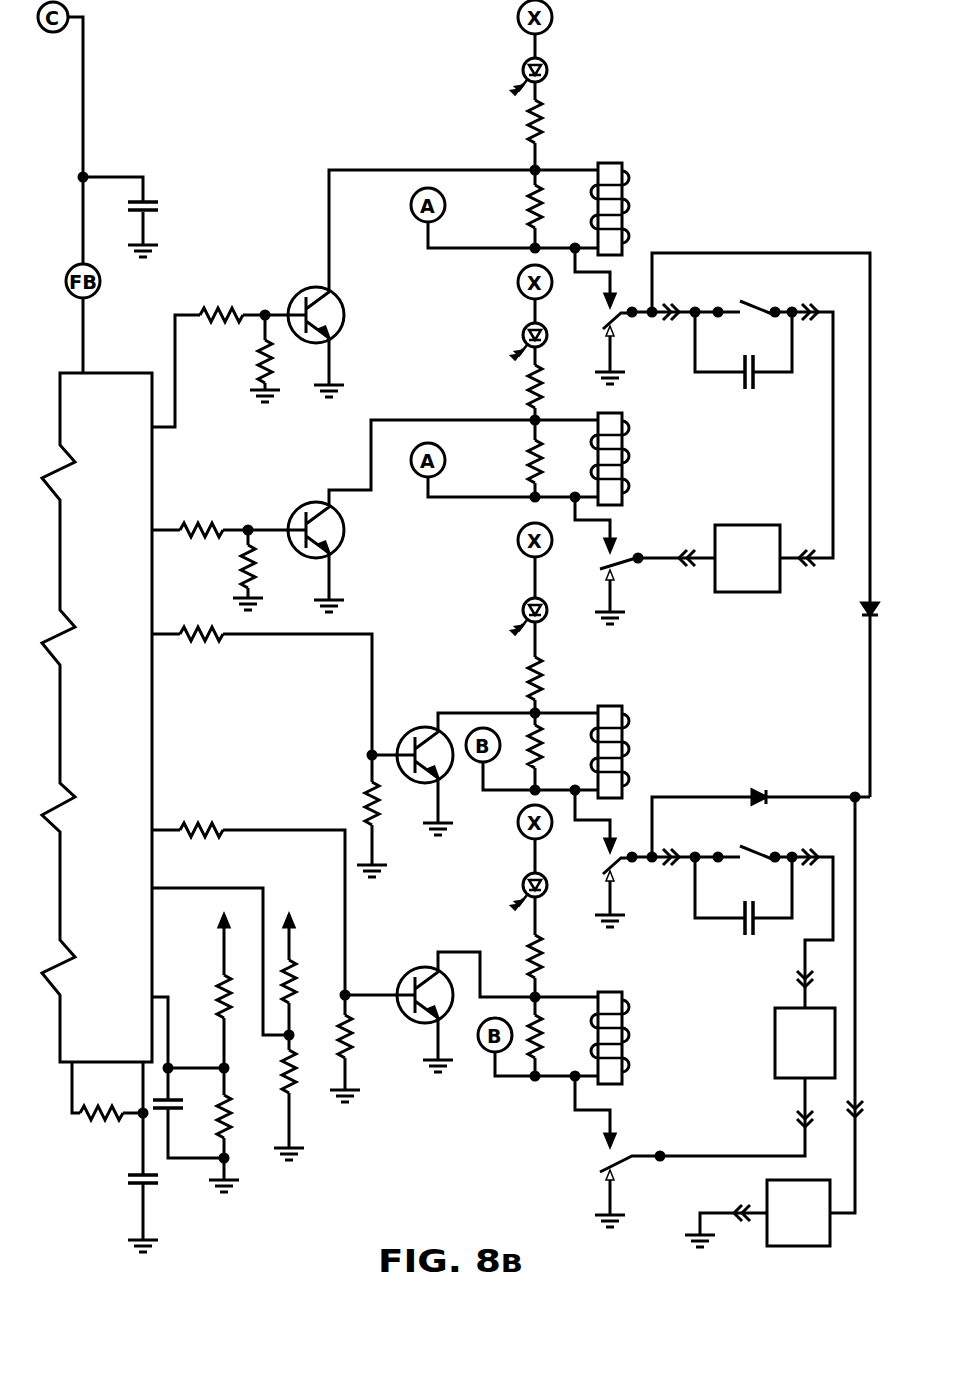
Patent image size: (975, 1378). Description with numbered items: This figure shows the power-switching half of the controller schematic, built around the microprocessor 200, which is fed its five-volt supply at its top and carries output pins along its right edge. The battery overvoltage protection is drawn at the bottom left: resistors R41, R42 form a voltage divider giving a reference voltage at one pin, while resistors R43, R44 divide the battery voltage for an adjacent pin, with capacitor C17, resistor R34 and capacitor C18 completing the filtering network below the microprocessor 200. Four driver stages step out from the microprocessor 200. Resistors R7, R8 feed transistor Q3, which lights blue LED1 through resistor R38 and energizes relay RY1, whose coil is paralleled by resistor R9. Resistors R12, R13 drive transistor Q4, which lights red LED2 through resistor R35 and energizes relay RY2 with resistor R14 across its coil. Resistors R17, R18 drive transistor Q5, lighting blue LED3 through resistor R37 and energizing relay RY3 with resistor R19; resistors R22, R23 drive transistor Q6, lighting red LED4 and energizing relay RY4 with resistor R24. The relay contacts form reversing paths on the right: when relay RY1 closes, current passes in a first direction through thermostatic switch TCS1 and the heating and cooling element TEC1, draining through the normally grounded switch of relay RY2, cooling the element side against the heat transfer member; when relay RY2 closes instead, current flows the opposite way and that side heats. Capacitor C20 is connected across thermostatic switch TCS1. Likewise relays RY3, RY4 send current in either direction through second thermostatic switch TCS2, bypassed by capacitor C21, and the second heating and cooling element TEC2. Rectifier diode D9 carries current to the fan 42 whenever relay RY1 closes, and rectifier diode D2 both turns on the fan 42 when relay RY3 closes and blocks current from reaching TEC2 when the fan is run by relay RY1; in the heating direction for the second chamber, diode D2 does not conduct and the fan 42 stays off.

The microprocessor 200 is at (118, 484).
The fan 42 is at (767, 1195).
The resistor R7 is at (221, 301).
The resistor R8 is at (252, 361).
The transistor Q3 is at (313, 307).
The resistor R12 is at (201, 516).
The resistor R13 is at (229, 566).
The transistor Q4 is at (316, 518).
The resistor R17 is at (202, 650).
The resistor R18 is at (354, 803).
The transistor Q5 is at (423, 744).
The resistor R22 is at (201, 816).
The resistor R23 is at (364, 1036).
The transistor Q6 is at (423, 984).
The resistor R42 is at (309, 981).
The resistor R41 is at (269, 1071).
The resistor R44 is at (204, 996).
The resistor R43 is at (242, 1119).
The capacitor C17 is at (185, 1093).
The resistor R34 is at (102, 1099).
The capacitor C18 is at (120, 1185).
The blue LED LED1 is at (501, 76).
The red LED LED2 is at (501, 341).
The blue LED LED3 is at (504, 616).
The red LED LED4 is at (501, 891).
The resistor R38 is at (556, 121).
The resistor R9 is at (551, 206).
The resistor R35 is at (556, 386).
The resistor R14 is at (556, 461).
The resistor R37 is at (556, 678).
The resistor R19 is at (556, 746).
The resistor R24 is at (556, 1036).
The relay RY1 is at (631, 209).
The relay RY2 is at (631, 459).
The relay RY3 is at (631, 752).
The relay RY4 is at (631, 1038).
The thermostatic switch TCS1 is at (753, 294).
The second thermostatic switch TCS2 is at (753, 839).
The capacitor C20 is at (743, 363).
The capacitor C21 is at (743, 909).
The heating and cooling element TEC1 is at (776, 569).
The second heating and cooling element TEC2 is at (832, 1054).
The rectifier diode D2 is at (761, 783).
The rectifier diode D9 is at (856, 614).